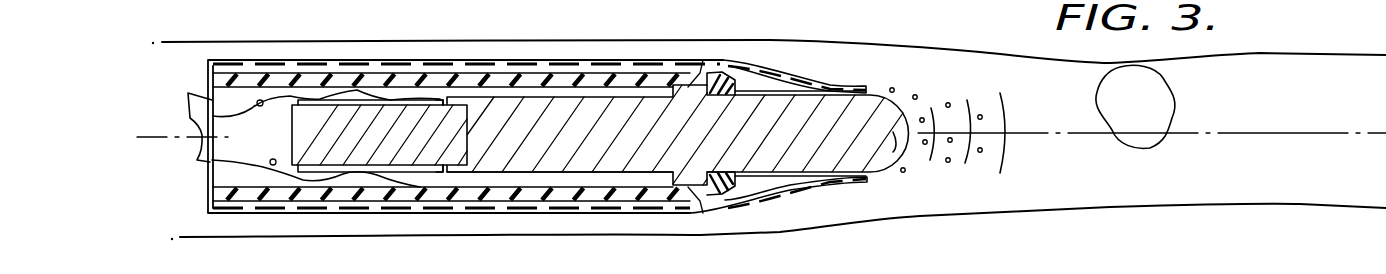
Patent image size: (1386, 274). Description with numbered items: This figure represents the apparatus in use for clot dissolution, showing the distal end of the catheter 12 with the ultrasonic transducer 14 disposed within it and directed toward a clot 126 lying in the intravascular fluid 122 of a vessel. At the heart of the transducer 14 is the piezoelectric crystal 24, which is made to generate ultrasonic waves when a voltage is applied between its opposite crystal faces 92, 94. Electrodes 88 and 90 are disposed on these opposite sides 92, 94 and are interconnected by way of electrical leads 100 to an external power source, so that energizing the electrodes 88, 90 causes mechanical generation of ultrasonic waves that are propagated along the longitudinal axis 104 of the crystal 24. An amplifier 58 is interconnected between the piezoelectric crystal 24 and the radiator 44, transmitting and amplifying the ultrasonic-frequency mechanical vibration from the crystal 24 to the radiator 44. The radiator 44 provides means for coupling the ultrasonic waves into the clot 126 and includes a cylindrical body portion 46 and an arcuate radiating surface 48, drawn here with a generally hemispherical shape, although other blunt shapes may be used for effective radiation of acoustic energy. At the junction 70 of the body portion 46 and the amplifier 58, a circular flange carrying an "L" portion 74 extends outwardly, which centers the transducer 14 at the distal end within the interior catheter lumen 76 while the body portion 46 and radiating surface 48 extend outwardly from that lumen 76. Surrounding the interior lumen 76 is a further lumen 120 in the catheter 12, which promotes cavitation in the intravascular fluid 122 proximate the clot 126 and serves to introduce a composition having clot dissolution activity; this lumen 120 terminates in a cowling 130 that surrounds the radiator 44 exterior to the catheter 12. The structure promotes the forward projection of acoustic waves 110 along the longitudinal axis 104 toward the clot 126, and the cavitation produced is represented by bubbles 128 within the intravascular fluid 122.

The catheter 12 is at (663, 60).
The ultrasonic transducer 14 is at (377, 62).
The piezoelectric crystal 24 is at (462, 133).
The radiator 44 is at (873, 172).
The cylindrical body portion 46 is at (778, 190).
The arcuate radiating surface 48 is at (902, 95).
The amplifier 58 is at (565, 173).
The junction 70 is at (733, 59).
The "L" portion 74 is at (690, 87).
The catheter lumen 76 is at (273, 150).
The electrode 88 is at (321, 114).
The electrode 90 is at (346, 172).
The crystal face 92 is at (443, 105).
The crystal face 94 is at (440, 172).
The electrical leads 100 is at (174, 119).
The longitudinal axis 104 is at (1282, 130).
The acoustic waves 110 is at (1007, 108).
The lumen 120 is at (562, 65).
The intravascular fluid 122 is at (1102, 180).
The clot 126 is at (1167, 97).
The bubbles 128 is at (980, 116).
The cowling 130 is at (830, 83).